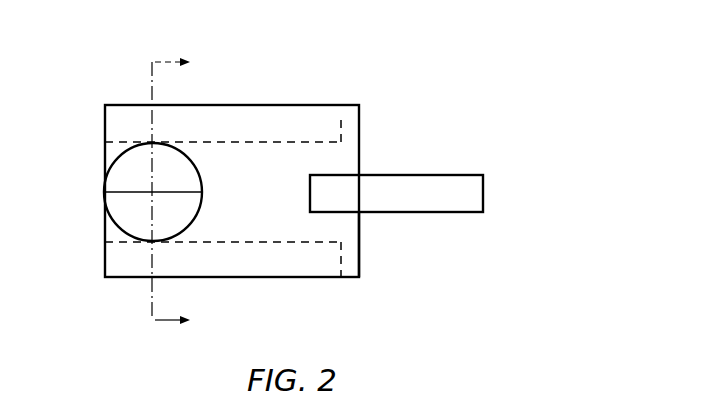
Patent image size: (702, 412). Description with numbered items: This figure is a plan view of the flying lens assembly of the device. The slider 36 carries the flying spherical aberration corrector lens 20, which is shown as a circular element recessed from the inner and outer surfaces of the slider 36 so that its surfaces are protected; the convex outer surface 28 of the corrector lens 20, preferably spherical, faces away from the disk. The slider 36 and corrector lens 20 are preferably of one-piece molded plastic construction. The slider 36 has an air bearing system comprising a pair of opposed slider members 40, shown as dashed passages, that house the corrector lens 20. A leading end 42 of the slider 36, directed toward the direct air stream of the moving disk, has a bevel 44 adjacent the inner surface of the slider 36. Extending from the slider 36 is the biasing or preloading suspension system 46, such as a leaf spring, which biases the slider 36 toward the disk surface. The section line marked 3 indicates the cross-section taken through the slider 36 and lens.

The slider 36 is at (382, 89).
The slider members 40 is at (311, 118).
The flying spherical aberration corrector lens 20 is at (190, 178).
The convex outer surface 28 is at (190, 207).
The leading end 42 is at (362, 222).
The bevel 44 is at (348, 260).
The suspension system 46 is at (484, 193).
The section line for FIG. 3 is at (180, 191).